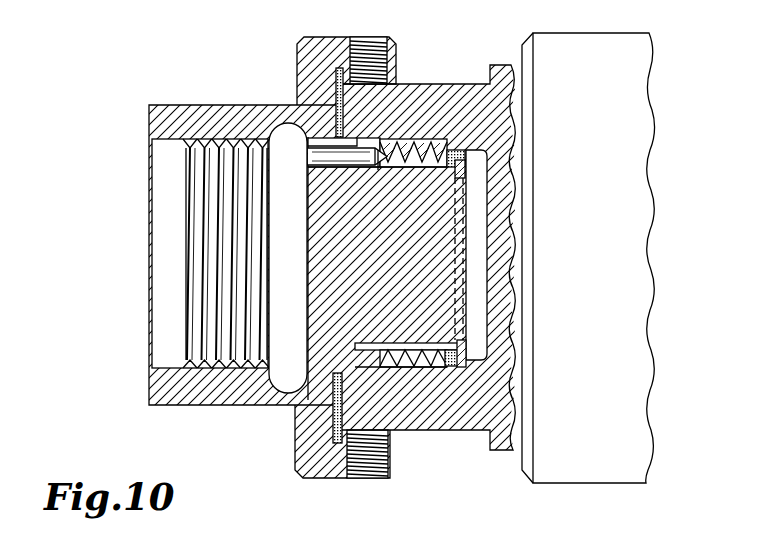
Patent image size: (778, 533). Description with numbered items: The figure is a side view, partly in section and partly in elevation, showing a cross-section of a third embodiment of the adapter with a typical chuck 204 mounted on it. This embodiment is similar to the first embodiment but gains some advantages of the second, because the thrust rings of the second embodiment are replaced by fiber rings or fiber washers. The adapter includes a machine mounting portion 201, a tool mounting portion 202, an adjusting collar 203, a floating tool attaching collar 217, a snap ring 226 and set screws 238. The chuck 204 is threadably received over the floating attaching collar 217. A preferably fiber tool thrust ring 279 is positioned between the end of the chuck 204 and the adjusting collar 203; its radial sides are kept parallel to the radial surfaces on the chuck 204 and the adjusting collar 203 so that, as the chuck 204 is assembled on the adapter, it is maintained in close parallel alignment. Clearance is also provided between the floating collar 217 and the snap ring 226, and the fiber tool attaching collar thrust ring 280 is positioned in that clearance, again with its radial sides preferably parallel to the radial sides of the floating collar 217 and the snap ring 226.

The machine mounting portion 201 is at (183, 118).
The tool mounting portion 202 is at (420, 195).
The adjusting collar 203 is at (312, 53).
The chuck 204 is at (505, 435).
The floating tool attaching collar 217 is at (408, 150).
The snap ring 226 is at (457, 153).
The set screws 238 is at (360, 473).
The fiber tool thrust ring 279 is at (333, 432).
The fiber tool attaching collar thrust ring 280 is at (448, 350).